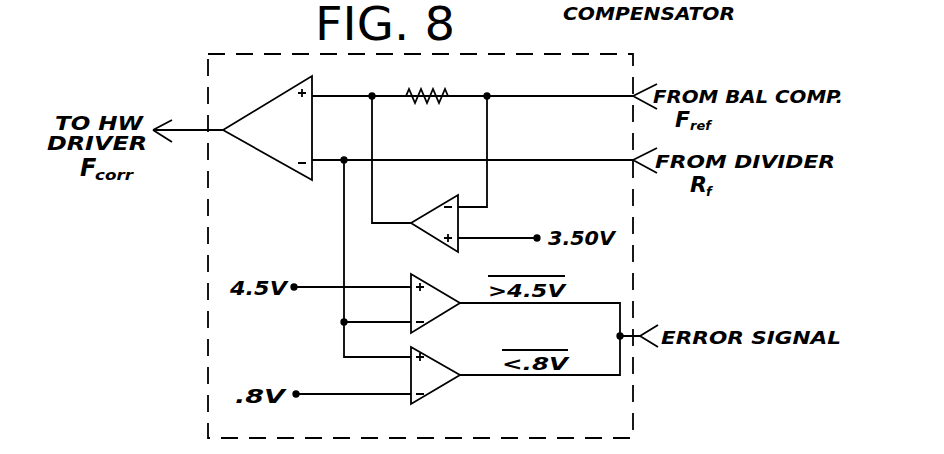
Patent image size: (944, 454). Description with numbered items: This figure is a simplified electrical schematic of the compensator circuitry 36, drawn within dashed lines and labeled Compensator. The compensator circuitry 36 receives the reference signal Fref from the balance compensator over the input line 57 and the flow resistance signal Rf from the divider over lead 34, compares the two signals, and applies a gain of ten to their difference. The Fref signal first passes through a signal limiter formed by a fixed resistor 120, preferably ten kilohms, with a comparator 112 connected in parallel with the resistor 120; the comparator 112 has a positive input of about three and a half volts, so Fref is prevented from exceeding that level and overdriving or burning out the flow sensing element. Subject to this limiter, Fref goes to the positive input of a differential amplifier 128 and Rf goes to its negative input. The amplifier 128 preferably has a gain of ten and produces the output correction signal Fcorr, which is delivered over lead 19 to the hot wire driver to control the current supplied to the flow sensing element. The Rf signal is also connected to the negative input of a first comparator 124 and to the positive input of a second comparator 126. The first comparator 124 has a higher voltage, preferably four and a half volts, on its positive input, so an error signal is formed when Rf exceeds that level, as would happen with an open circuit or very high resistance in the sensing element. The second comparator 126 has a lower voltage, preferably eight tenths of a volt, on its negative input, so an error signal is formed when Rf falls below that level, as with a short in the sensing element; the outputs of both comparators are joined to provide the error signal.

The lead 19 is at (188, 129).
The lead 34 is at (619, 159).
The compensator circuitry 36 is at (527, 54).
The input from balance comparator (Fref) 57 is at (631, 94).
The amplifier 112 is at (432, 212).
The fixed resistor 120 is at (435, 88).
The first comparator 124 is at (427, 324).
The second comparator 126 is at (425, 397).
The differential amplifier 128 is at (268, 158).